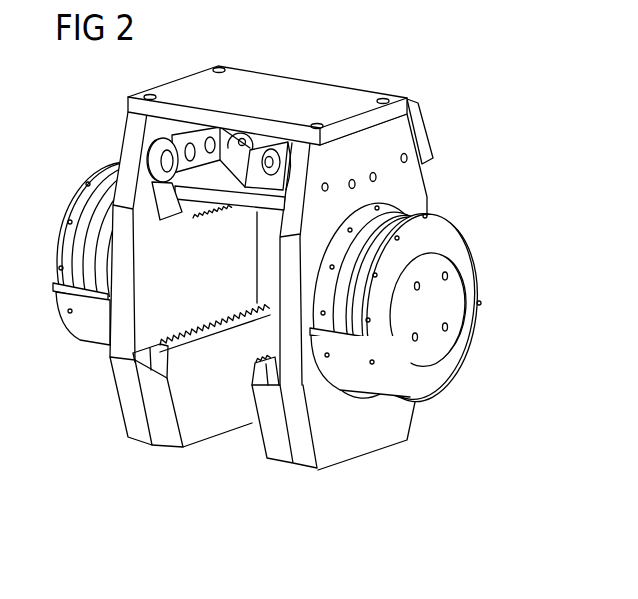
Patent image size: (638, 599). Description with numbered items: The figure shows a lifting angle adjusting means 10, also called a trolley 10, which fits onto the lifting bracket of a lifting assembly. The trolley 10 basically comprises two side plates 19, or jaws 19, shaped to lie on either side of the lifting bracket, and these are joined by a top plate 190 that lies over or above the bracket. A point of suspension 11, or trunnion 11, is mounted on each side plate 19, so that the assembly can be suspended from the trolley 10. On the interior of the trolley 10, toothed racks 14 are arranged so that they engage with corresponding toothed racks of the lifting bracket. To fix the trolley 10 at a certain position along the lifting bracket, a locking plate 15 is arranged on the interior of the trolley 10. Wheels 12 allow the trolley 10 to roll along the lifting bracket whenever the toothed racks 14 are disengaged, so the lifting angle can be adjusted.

The lifting angle adjusting means 10 is at (449, 124).
The point of suspension 11 is at (90, 172).
The wheel 12 is at (287, 158).
The toothed rack 14 is at (202, 226).
The locking plate 15 is at (245, 205).
The side plate 19 is at (125, 395).
The top plate 190 is at (325, 98).